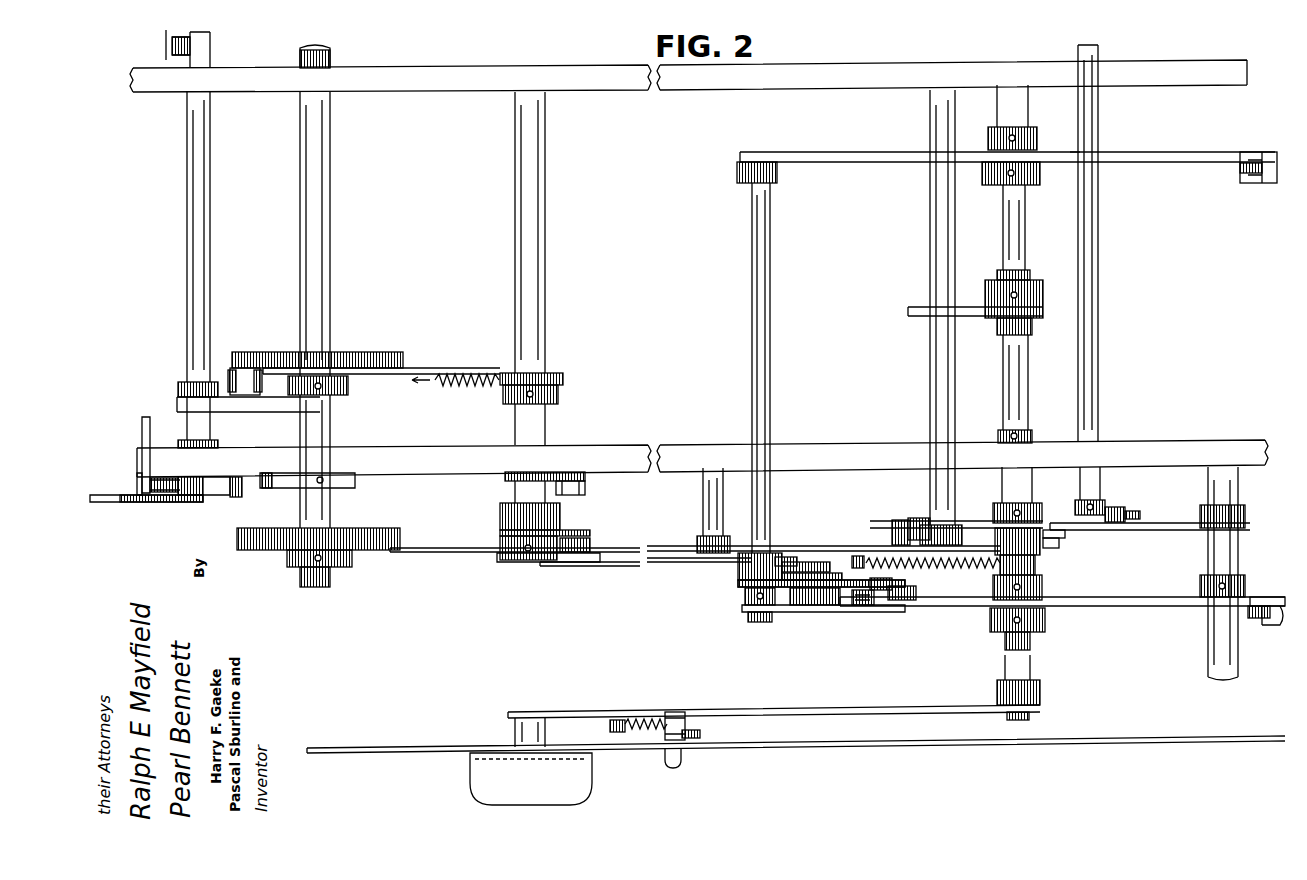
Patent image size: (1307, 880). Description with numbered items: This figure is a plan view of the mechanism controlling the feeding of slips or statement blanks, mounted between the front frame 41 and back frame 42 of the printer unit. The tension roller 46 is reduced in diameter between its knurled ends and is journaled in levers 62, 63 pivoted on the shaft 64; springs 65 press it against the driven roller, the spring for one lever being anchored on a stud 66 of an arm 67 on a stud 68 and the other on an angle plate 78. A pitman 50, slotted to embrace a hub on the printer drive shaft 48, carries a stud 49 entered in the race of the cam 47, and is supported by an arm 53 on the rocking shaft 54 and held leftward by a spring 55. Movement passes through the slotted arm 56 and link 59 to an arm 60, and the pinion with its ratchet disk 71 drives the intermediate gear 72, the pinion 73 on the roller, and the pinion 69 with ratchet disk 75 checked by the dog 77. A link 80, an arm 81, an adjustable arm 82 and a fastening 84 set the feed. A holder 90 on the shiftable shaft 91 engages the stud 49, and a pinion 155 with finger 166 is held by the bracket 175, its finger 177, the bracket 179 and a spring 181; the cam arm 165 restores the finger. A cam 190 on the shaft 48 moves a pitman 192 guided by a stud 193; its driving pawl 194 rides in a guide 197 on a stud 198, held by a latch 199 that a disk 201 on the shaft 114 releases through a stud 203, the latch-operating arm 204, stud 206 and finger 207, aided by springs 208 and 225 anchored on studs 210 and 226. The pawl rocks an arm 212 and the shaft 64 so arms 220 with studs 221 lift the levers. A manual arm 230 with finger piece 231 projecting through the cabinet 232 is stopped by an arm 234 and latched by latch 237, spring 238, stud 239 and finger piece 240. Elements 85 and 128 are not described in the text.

The front frame 41 is at (1179, 442).
The back frame 42 is at (1186, 82).
The tension roller 46 is at (737, 180).
The cam 47 is at (388, 348).
The printer drive shaft 48 is at (310, 222).
The stud 49 is at (246, 370).
The pitman 50 is at (430, 370).
The arm 53 is at (506, 386).
The rocking shaft 54 is at (522, 320).
The spring 55 is at (463, 387).
The slotted arm 56 is at (526, 562).
The link 59 is at (600, 566).
The arm 60 is at (830, 558).
The lever 62 is at (1162, 588).
The lever 63 is at (1206, 156).
The shaft 64 is at (1018, 224).
The spring 65 is at (1250, 173).
The stud 66 is at (1282, 624).
The arm 67 is at (1280, 598).
The stud 68 is at (1236, 480).
The pinion 69 is at (891, 585).
The ratchet disk 71 is at (806, 578).
The intermediate gear 72 is at (846, 605).
The pinion 73 is at (738, 587).
The ratchet disk 75 is at (916, 591).
The spring-pressed dog 77 is at (880, 605).
The angle plate 78 is at (1266, 183).
The link 80 is at (588, 546).
The arm 81 is at (500, 527).
The arm 82 is at (505, 478).
The fastening 84 is at (585, 484).
The disc 85 is at (588, 530).
The holder 90 is at (285, 412).
The shiftable shaft 91 is at (190, 225).
The shaft 114 is at (1092, 292).
The bracket 128 is at (168, 47).
The pinion 155 is at (228, 498).
The cam arm 165 is at (294, 490).
The finger 166 is at (242, 487).
The bracket 175 is at (138, 478).
The finger 177 is at (190, 504).
The second bracket 179 is at (142, 424).
The spring 181 is at (156, 478).
The cam 190 is at (350, 528).
The pitman 192 is at (442, 548).
The stud 193 is at (930, 364).
The driving pawl 194 is at (992, 524).
The guide 197 is at (788, 548).
The stud 198 is at (703, 489).
The latch 199 is at (1018, 544).
The disk 201 is at (1138, 512).
The stud 203 is at (1118, 510).
The latch-operating arm 204 is at (1152, 530).
The stud 206 is at (1060, 544).
The finger 207 is at (1064, 534).
The spring 208 is at (918, 520).
The stud 210 is at (894, 522).
The arm 212 is at (1044, 498).
The arms 220 is at (1078, 162).
The stud 221 is at (1086, 152).
The spring 225 is at (950, 566).
The stud 226 is at (866, 536).
The manually operable arm 230 is at (802, 708).
The finger piece 231 is at (586, 774).
The cabinet 232 is at (452, 746).
The arm 234 is at (906, 308).
The latch 237 is at (700, 734).
The spring 238 is at (650, 698).
The stud 239 is at (676, 720).
The finger piece 240 is at (680, 758).